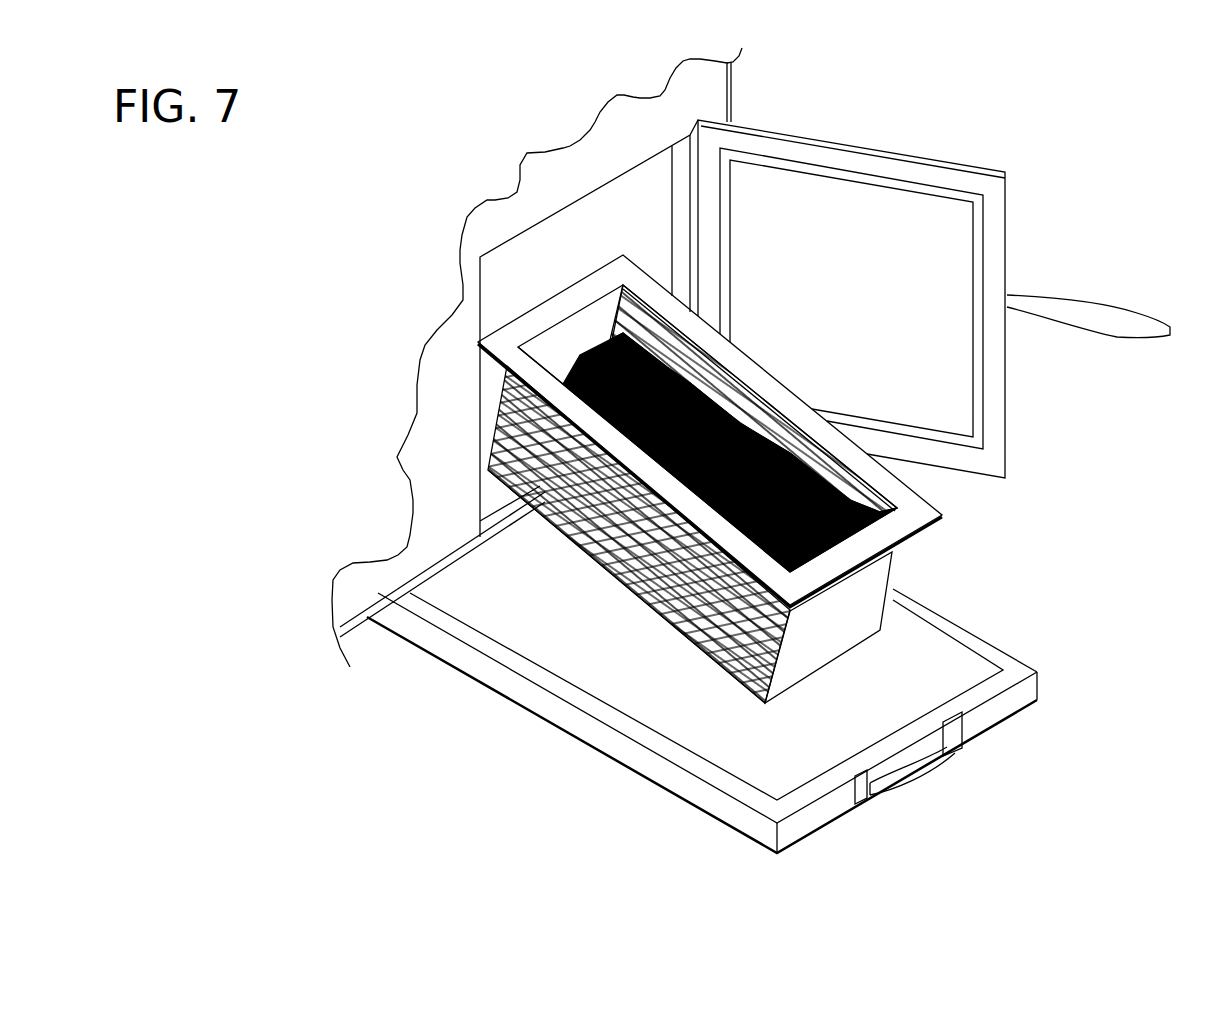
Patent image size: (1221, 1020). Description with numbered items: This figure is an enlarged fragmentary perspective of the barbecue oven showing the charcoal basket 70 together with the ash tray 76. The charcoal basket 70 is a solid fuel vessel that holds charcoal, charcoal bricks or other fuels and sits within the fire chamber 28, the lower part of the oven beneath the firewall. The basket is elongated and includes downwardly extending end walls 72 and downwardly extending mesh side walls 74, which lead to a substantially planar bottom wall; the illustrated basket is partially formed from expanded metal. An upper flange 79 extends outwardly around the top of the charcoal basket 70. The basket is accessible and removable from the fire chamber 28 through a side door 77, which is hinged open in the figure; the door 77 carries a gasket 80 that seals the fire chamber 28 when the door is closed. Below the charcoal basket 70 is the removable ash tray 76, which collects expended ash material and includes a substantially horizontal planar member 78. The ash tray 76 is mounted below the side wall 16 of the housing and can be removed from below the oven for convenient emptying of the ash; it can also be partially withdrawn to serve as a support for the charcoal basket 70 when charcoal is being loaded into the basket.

The side wall 16 is at (690, 93).
The fire chamber 28 is at (556, 246).
The charcoal basket 70 is at (943, 513).
The end wall 72 is at (555, 352).
The mesh side wall 74 is at (490, 458).
The ash tray 76 is at (1022, 709).
The side door 77 is at (913, 172).
The planar member 78 is at (690, 713).
The upper flange 79 is at (593, 553).
The gasket 80 is at (978, 256).